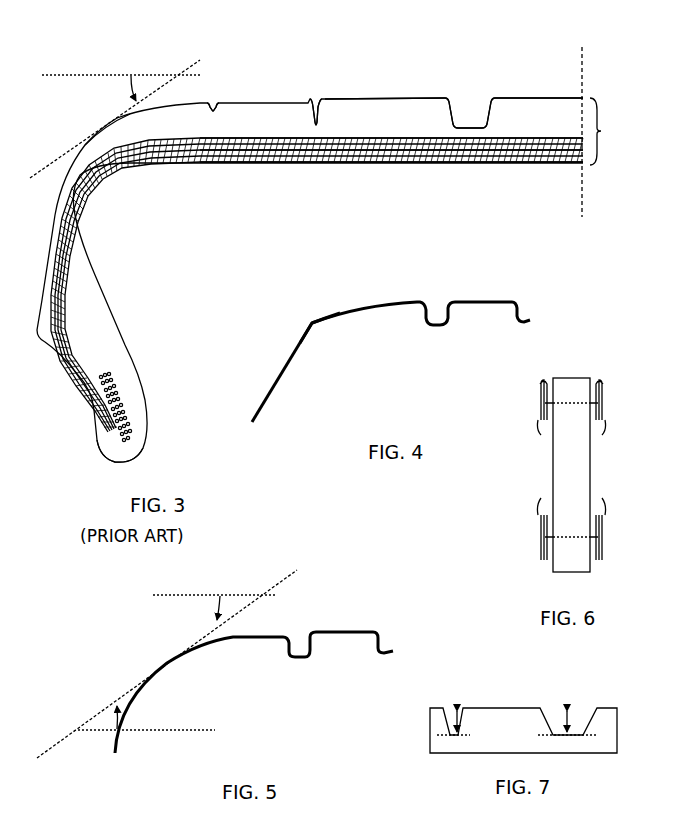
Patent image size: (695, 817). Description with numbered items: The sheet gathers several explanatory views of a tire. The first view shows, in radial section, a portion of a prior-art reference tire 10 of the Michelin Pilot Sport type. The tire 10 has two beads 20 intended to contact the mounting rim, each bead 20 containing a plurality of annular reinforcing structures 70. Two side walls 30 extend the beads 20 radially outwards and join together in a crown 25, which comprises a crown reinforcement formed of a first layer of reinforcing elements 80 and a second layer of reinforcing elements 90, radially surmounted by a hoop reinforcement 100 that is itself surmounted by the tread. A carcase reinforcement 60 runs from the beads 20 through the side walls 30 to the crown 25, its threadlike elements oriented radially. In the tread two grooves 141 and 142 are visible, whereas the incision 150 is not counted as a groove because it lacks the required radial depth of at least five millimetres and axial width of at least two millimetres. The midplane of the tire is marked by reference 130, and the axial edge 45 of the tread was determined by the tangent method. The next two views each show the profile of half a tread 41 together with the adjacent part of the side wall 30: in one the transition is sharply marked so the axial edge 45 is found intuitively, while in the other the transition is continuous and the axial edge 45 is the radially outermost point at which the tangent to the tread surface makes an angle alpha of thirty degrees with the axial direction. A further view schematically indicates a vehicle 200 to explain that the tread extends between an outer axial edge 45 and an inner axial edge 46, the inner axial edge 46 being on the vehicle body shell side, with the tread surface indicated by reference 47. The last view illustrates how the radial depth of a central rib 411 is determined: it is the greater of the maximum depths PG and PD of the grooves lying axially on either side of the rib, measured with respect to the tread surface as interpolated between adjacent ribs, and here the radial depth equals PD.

In FIG. 3, the tire 10 is at (60, 60).
In FIG. 3, the bead 20 is at (99, 432).
In FIG. 3, the crown 25 is at (610, 131).
In FIG. 3, the side wall 30 is at (46, 255).
In FIG. 4, the side wall 30 is at (270, 360).
In FIG. 3, the half-tread 41 is at (441, 124).
In FIG. 4, the half-tread 41 is at (404, 336).
In FIG. 5, the half-tread 41 is at (269, 668).
In FIG. 3, the axial edge 45 is at (99, 129).
In FIG. 4, the axial edge 45 is at (309, 318).
In FIG. 5, the axial edge 45 is at (165, 660).
In FIG. 6, the axial edge 45 is at (528, 424).
In FIG. 6, the inner axial edge 46 is at (543, 428).
In FIG. 3, the tread surface 47 is at (548, 92).
In FIG. 3, the carcase reinforcement 60 is at (72, 222).
In FIG. 3, the annular reinforcing structures 70 is at (122, 388).
In FIG. 3, the first layer of reinforcing elements 80 is at (253, 143).
In FIG. 3, the second layer of reinforcing elements 90 is at (284, 143).
In FIG. 3, the hoop reinforcement 100 is at (365, 143).
In FIG. 3, the midplane 130 is at (580, 212).
In FIG. 3, the groove 141 is at (318, 92).
In FIG. 3, the groove 142 is at (468, 101).
In FIG. 3, the incision 150 is at (213, 97).
In FIG. 6, the vehicle 200 is at (571, 475).
In FIG. 7, the central rib 411 is at (498, 712).
In FIG. 7, the maximum depth PG is at (453, 708).
In FIG. 7, the maximum depth PD is at (568, 706).